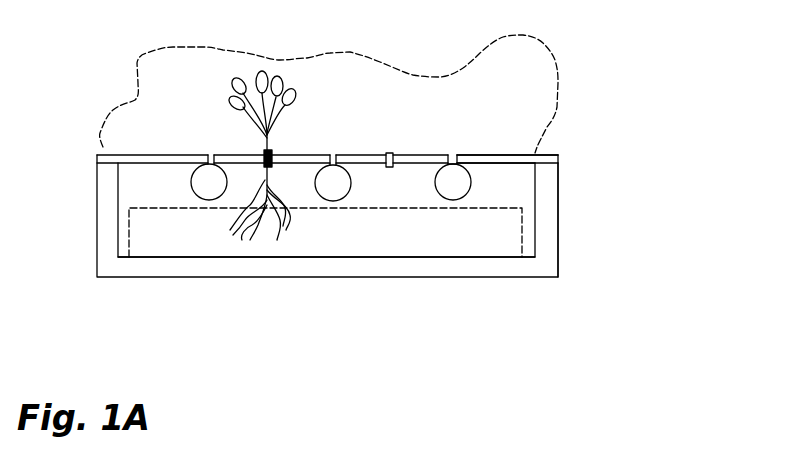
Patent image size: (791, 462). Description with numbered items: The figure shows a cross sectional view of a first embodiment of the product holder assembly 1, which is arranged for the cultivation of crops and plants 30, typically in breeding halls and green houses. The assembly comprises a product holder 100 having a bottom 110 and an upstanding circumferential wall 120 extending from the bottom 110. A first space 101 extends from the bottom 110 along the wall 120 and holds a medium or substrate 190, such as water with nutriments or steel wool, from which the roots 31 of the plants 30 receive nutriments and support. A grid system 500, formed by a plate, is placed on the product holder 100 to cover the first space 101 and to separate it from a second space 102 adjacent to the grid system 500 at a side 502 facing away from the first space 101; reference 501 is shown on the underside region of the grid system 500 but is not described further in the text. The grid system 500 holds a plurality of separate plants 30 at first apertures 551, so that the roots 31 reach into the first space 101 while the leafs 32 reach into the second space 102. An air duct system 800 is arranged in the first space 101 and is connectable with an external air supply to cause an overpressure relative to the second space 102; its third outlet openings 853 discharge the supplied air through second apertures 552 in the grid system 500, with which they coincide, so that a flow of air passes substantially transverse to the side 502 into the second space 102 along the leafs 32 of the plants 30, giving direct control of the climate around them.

The product holder assembly 1 is at (640, 369).
The plant 30 is at (263, 133).
The roots 31 is at (262, 240).
The leafs 32 is at (242, 87).
The product holder 100 is at (547, 267).
The first space 101 is at (528, 240).
The second space 102 is at (529, 64).
The bottom 110 is at (445, 267).
The upstanding circumferential wall 120 is at (545, 247).
The medium or substrate 190 is at (158, 235).
The grid system 500 is at (518, 155).
The cover underside 501 is at (508, 165).
The side of the grid system 502 is at (497, 155).
The first apertures 551 is at (392, 153).
The second apertures 552 is at (209, 153).
The air duct system 800 is at (448, 183).
The third outlet openings 853 is at (455, 167).